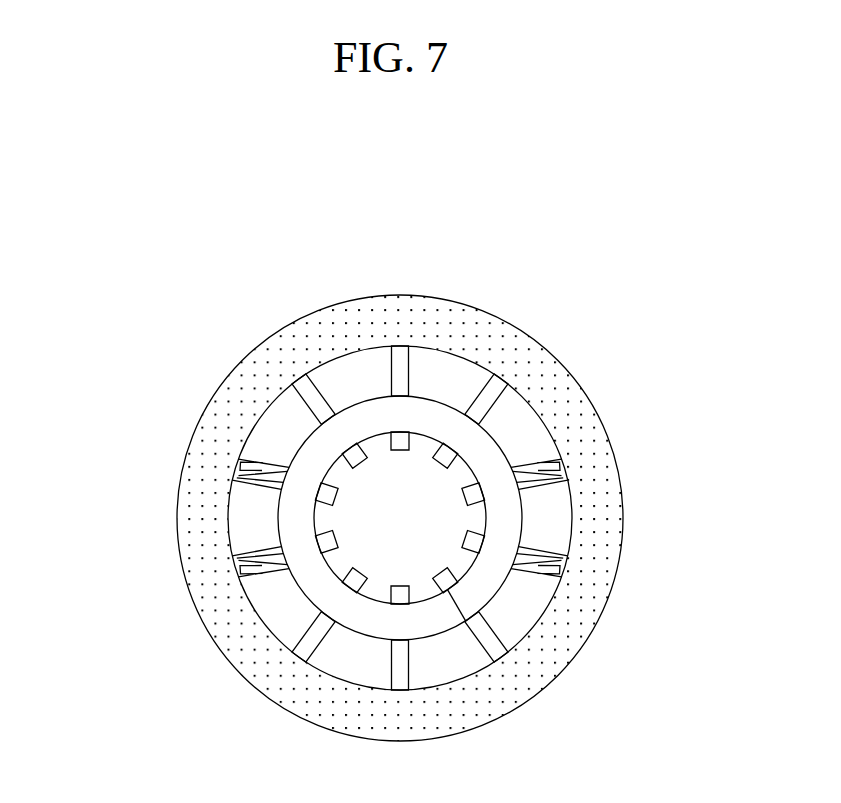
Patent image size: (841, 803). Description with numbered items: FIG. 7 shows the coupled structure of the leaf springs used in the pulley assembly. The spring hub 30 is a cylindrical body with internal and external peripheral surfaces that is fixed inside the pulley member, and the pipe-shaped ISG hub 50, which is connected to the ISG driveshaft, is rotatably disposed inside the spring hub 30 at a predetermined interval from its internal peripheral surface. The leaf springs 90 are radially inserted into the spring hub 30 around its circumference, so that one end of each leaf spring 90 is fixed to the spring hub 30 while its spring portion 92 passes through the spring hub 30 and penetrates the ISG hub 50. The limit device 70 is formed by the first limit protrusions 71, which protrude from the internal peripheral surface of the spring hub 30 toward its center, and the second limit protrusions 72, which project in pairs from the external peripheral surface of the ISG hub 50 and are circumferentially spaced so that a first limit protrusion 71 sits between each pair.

The spring hub 30 is at (549, 330).
The ISG hub 50 is at (508, 432).
The limit device 70 is at (313, 522).
The first limit protrusion 71 is at (242, 521).
The second limit protrusion 72 is at (247, 463).
The leaf spring 90 is at (420, 362).
The spring portion 92 is at (398, 366).